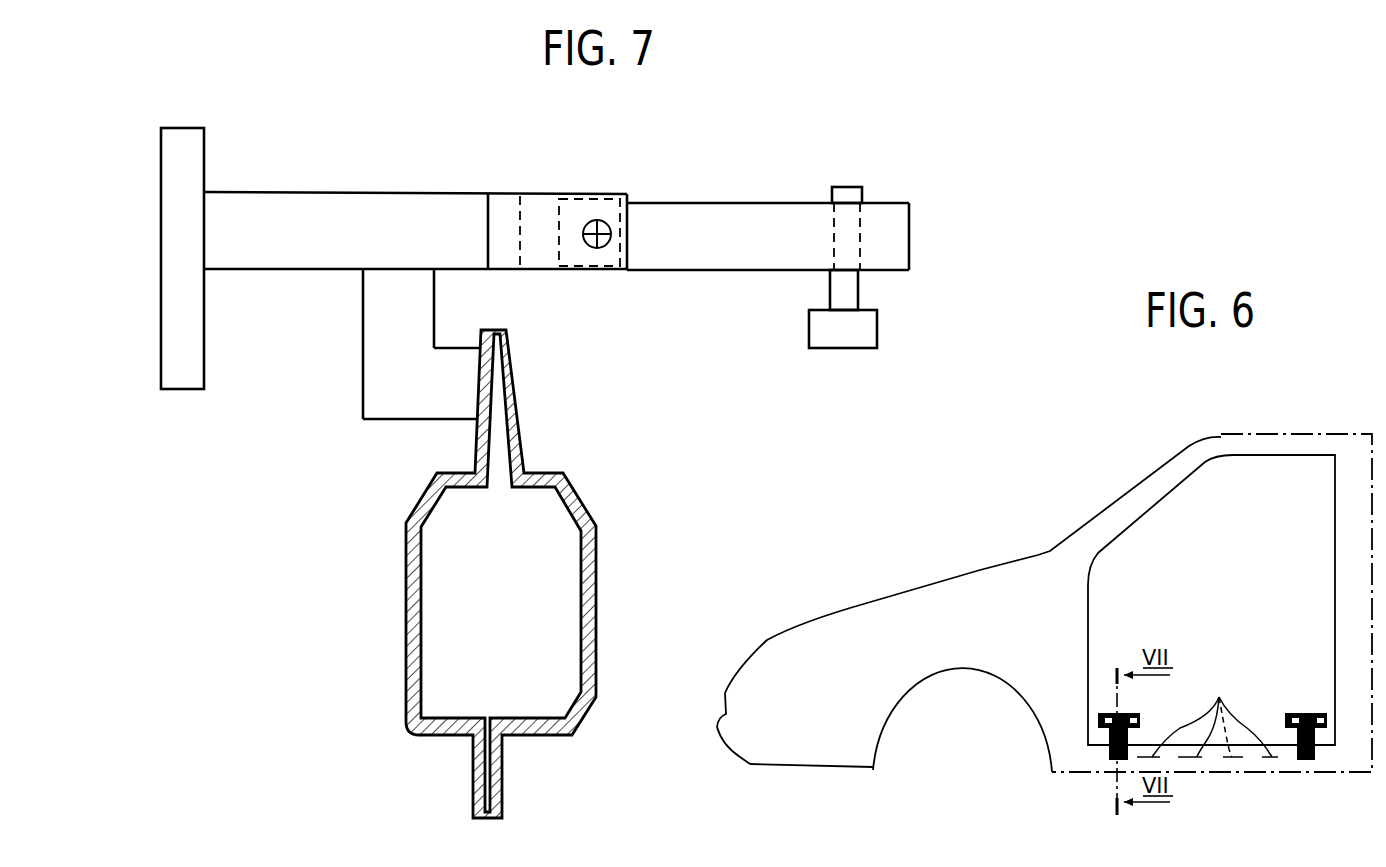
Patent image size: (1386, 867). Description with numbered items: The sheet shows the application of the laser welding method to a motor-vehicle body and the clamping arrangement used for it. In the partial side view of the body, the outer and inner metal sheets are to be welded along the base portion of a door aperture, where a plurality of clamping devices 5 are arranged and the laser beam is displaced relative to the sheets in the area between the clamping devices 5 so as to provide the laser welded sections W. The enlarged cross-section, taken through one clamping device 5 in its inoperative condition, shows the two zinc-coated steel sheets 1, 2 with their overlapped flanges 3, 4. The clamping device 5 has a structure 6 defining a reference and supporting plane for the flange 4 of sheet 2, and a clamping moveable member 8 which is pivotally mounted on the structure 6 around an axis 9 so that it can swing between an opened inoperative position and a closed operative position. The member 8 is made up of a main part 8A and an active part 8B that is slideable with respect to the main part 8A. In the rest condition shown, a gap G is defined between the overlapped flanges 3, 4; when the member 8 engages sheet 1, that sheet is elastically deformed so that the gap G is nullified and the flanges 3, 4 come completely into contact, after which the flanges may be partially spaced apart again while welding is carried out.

In FIG. 7, the steel sheet 1 is at (491, 574).
In FIG. 7, the steel sheet 2 is at (439, 574).
In FIG. 7, the flange 3 is at (477, 574).
In FIG. 7, the flange 4 is at (475, 443).
In FIG. 7, the clamping device 5 is at (726, 287).
In FIG. 6, the clamping device 5 is at (1100, 752).
In FIG. 7, the structure 6 is at (343, 176).
In FIG. 7, the clamping moveable member 8 is at (918, 236).
In FIG. 7, the main part 8A is at (909, 225).
In FIG. 7, the active part 8B is at (860, 292).
In FIG. 7, the axis 9 is at (603, 247).
In FIG. 7, the gap G is at (499, 483).
In FIG. 6, the laser welded sections W is at (1207, 713).